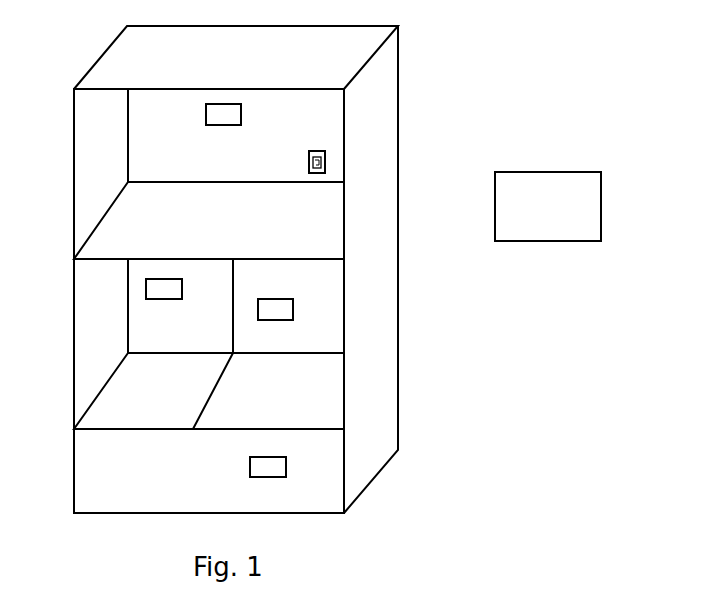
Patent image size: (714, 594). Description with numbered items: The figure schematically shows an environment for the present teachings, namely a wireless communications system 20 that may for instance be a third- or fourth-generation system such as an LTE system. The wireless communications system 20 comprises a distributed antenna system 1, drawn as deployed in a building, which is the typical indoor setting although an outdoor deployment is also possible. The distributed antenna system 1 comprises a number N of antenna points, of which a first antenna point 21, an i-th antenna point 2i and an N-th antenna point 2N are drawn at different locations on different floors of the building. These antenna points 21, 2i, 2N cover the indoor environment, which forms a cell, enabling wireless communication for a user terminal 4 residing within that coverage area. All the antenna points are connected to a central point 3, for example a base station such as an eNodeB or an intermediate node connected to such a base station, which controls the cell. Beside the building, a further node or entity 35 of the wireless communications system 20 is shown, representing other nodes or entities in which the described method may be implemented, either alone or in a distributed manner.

The wireless communications system 20 is at (481, 72).
The distributed antenna system 1 is at (369, 144).
The antenna point 21 is at (217, 113).
The antenna point 2i is at (168, 292).
The antenna point 2N is at (268, 468).
The central point 3 is at (277, 310).
The user terminal 4 is at (312, 163).
The node or entity 35 is at (527, 171).